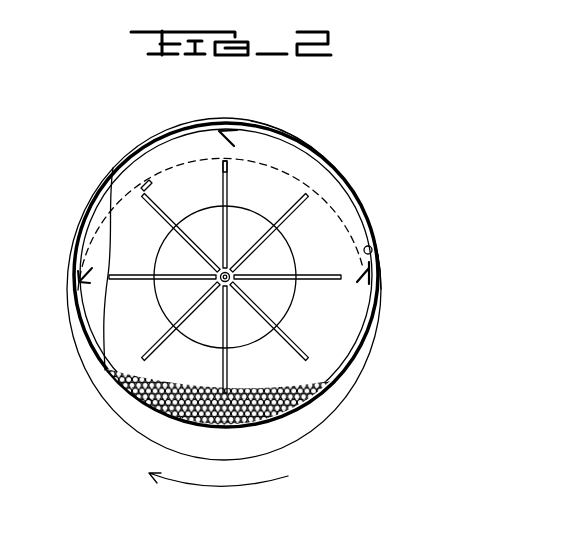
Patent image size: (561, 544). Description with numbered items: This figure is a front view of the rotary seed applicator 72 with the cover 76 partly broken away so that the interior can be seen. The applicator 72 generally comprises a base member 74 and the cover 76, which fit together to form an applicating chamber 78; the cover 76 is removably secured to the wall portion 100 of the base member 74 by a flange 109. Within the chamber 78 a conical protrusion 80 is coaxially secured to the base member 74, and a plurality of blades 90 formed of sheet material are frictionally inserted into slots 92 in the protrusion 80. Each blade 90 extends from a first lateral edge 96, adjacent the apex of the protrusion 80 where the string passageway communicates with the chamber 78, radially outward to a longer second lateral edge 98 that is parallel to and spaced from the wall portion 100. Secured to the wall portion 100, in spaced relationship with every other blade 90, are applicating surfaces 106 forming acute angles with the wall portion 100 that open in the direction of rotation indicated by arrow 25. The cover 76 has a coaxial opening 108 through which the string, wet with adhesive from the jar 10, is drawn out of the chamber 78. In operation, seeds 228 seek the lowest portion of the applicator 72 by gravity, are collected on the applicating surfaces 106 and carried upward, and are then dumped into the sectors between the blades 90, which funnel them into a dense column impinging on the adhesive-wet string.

The jar 10 is at (358, 380).
The arrow 25 is at (202, 490).
The rotary seed applicator 72 is at (310, 148).
The base member 74 is at (367, 212).
The cover 76 is at (97, 317).
The applicating chamber 78 is at (362, 308).
The conical protrusion 80 is at (287, 244).
The blades 90 is at (229, 184).
The slots 92 is at (222, 226).
The first lateral edge 96 is at (230, 280).
The second lateral edge 98 is at (143, 190).
The wall portion 100 is at (374, 250).
The applicating surfaces 106 is at (237, 128).
The coaxial opening 108 is at (227, 282).
The flange 109 is at (72, 242).
The seeds 228 is at (295, 413).